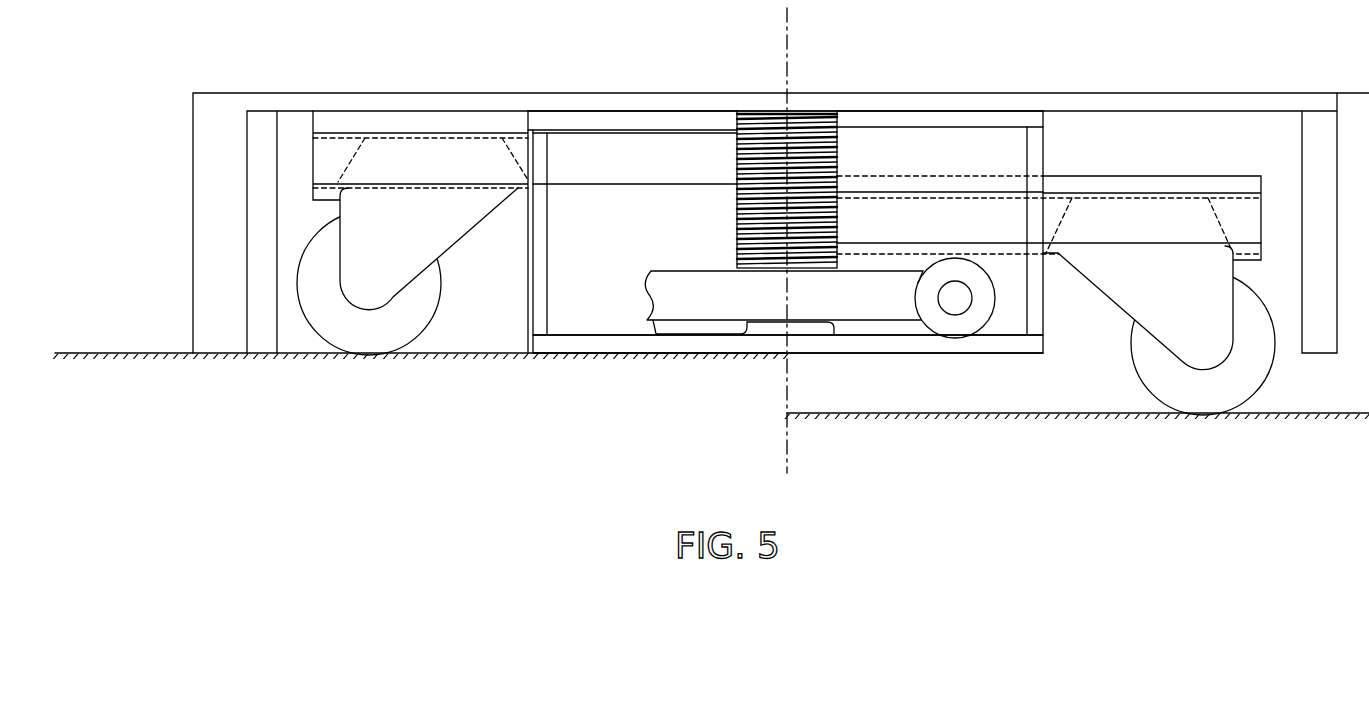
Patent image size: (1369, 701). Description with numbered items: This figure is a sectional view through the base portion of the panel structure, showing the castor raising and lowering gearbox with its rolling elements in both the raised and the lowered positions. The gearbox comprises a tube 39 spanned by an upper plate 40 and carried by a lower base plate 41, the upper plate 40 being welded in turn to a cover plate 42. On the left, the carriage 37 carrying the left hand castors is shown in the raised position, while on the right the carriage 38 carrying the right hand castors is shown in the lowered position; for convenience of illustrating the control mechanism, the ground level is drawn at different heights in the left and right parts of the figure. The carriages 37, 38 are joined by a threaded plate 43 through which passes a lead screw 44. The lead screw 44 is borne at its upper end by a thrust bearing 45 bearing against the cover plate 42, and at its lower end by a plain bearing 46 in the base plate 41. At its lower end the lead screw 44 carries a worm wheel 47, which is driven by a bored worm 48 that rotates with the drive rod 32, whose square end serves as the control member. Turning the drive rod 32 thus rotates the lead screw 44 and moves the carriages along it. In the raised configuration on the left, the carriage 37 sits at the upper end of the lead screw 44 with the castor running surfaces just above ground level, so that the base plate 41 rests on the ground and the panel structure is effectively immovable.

The drive rod 32 is at (943, 313).
The left carriage 37 is at (508, 115).
The right carriage 38 is at (1175, 175).
The tube 39 is at (530, 295).
The upper plate 40 is at (718, 118).
The base plate 41 is at (610, 355).
The cover plate 42 is at (985, 93).
The threaded plate 43 is at (622, 127).
The lead screw 44 is at (736, 236).
The thrust bearing 45 is at (852, 118).
The plain bearing 46 is at (840, 334).
The worm wheel 47 is at (653, 322).
The bored worm 48 is at (980, 322).